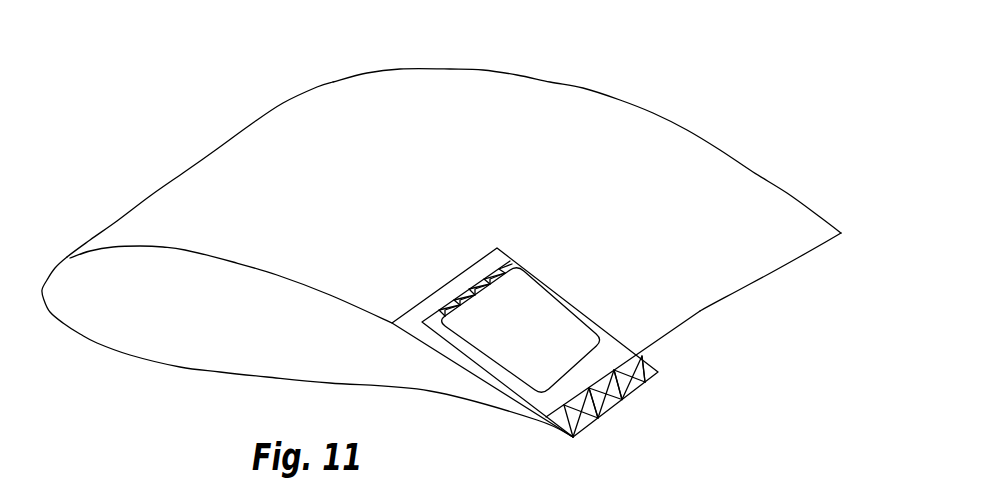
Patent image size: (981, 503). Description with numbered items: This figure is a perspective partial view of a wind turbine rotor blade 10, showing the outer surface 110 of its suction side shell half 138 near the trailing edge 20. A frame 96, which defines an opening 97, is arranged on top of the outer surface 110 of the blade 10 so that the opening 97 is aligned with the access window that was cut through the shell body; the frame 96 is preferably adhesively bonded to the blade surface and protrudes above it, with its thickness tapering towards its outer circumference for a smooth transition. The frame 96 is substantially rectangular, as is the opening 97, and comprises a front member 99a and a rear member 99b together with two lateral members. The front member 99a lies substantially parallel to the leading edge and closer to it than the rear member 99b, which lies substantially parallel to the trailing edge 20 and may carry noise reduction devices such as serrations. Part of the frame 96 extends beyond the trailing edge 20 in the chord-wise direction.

The wind turbine rotor blade 10 is at (154, 152).
The trailing edge 20 is at (747, 284).
The frame 96 is at (613, 346).
The opening 97 is at (498, 345).
The front member 99a is at (515, 258).
The rear member 99b is at (570, 417).
The outer surface 110 is at (488, 196).
The suction side shell half 138 is at (538, 95).